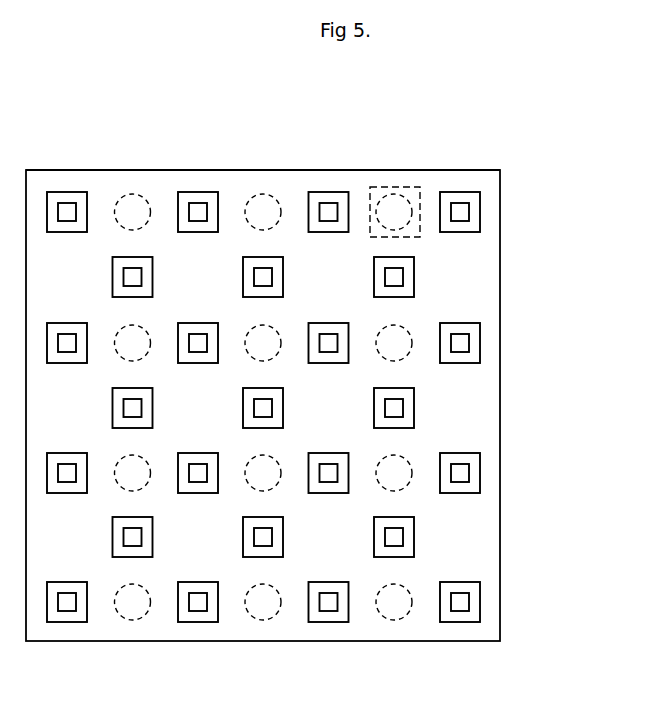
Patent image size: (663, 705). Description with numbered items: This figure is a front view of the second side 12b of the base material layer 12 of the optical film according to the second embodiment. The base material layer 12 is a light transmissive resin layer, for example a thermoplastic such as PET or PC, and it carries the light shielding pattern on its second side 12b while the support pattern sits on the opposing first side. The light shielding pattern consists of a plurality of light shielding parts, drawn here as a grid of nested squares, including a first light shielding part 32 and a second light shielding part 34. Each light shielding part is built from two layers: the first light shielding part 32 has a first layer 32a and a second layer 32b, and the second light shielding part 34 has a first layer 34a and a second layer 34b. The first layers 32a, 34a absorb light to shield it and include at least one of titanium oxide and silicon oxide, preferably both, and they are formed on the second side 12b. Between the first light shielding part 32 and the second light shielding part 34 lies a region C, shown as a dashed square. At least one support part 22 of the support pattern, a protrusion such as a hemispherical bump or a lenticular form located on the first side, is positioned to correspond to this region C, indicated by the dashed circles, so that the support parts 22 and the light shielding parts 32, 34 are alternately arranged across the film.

The base material layer 12 is at (502, 280).
The second side 12b is at (72, 178).
The support part 22 is at (397, 203).
The first light shielding part 32 is at (346, 163).
The first layer 32a is at (322, 200).
The second layer 32b is at (332, 218).
The second light shielding part 34 is at (516, 212).
The first layer 34a is at (473, 202).
The second layer 34b is at (465, 212).
The region C is at (422, 200).